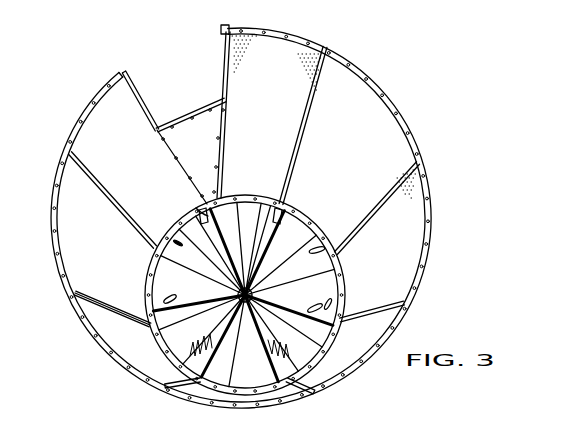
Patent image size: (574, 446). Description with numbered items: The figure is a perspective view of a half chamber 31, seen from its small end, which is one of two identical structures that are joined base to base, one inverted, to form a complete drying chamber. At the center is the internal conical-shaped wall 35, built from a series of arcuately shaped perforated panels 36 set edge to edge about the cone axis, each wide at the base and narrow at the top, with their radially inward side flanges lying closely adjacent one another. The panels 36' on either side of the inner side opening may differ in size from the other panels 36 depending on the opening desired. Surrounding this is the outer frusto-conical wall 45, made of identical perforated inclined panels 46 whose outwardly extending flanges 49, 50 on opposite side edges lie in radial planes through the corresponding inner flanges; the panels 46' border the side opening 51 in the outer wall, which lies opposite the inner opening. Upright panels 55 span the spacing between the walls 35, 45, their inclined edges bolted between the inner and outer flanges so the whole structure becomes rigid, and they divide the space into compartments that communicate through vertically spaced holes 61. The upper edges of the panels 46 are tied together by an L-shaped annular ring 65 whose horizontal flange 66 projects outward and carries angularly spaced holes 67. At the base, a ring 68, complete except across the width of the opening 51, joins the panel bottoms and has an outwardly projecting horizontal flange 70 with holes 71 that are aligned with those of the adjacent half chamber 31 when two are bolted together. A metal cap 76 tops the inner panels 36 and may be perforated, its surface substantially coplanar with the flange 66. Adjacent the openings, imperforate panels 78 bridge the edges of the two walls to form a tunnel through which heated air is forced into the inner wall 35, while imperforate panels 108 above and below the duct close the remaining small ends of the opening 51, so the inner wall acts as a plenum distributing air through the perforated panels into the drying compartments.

The half chamber 31 is at (445, 217).
The internal conical-shaped wall 35 is at (248, 214).
The perforated panel 36 is at (290, 350).
The panel on opposite side of opening 36' is at (214, 207).
The outer frusto-conical wall 45 is at (405, 208).
The perforated inclined panel 46 is at (242, 250).
The panel on opposite side of opening 46' is at (222, 120).
The outwardly extending flange 49 is at (312, 84).
The outwardly extending flange 50 is at (91, 173).
The side opening 51 is at (179, 84).
The upright panel 55 is at (172, 264).
The hole 61 is at (304, 225).
The annular ring 65 is at (317, 214).
The horizontal flange 66 is at (318, 248).
The hole 67 is at (344, 257).
The annular ring 68 is at (405, 123).
The horizontal flange 70 is at (393, 100).
The hole 71 is at (368, 72).
The metal cap 76 is at (220, 309).
The imperforate panel 78 is at (196, 209).
The imperforate panel 108 is at (222, 152).